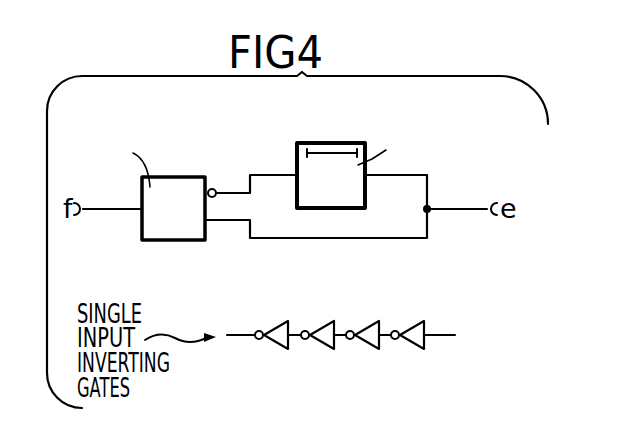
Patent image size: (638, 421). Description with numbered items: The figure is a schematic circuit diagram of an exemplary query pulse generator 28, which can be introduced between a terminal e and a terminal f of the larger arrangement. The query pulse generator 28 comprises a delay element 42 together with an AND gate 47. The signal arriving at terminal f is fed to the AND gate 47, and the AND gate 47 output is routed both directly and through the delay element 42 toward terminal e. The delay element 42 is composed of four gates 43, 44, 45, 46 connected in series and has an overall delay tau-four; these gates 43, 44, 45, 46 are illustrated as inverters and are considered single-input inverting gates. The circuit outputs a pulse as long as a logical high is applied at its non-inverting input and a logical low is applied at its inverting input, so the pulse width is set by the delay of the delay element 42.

The query pulse generator 28 is at (520, 115).
The AND gate 47 is at (184, 178).
The delay element 42 is at (332, 143).
The gate 43 is at (411, 317).
The gate 44 is at (362, 317).
The gate 45 is at (317, 317).
The gate 46 is at (271, 317).